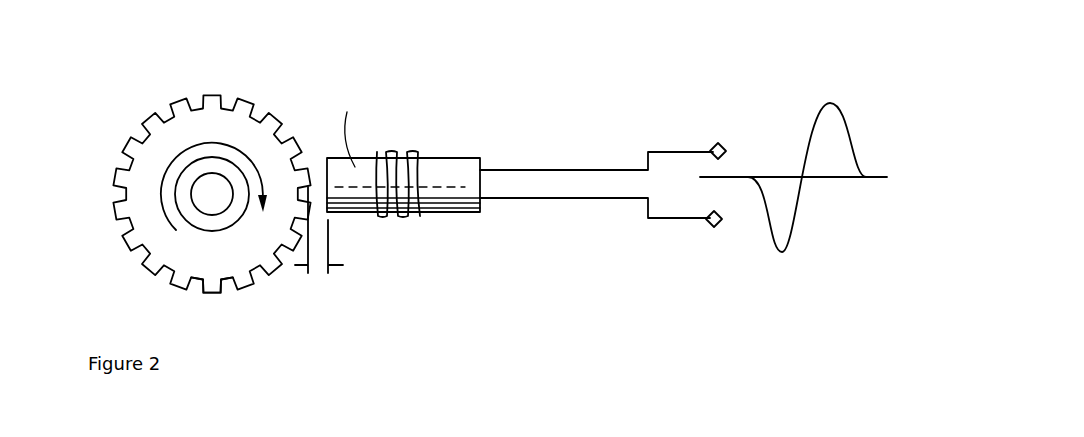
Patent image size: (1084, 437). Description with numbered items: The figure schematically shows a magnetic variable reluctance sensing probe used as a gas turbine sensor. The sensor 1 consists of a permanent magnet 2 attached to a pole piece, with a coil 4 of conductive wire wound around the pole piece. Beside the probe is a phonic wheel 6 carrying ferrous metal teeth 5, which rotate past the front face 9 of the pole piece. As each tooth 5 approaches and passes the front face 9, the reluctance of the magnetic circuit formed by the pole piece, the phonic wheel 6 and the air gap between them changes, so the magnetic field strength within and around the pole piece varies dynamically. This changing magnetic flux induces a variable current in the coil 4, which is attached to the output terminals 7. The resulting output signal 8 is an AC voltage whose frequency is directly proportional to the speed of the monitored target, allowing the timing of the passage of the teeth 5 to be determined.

The sensor 1 is at (390, 297).
The permanent magnet 2 is at (455, 168).
The coil 4 is at (412, 212).
The teeth 5 is at (250, 287).
The phonic wheel 6 is at (150, 160).
The output terminals 7 is at (712, 217).
The output signal 8 is at (860, 222).
The front face 9 is at (322, 172).